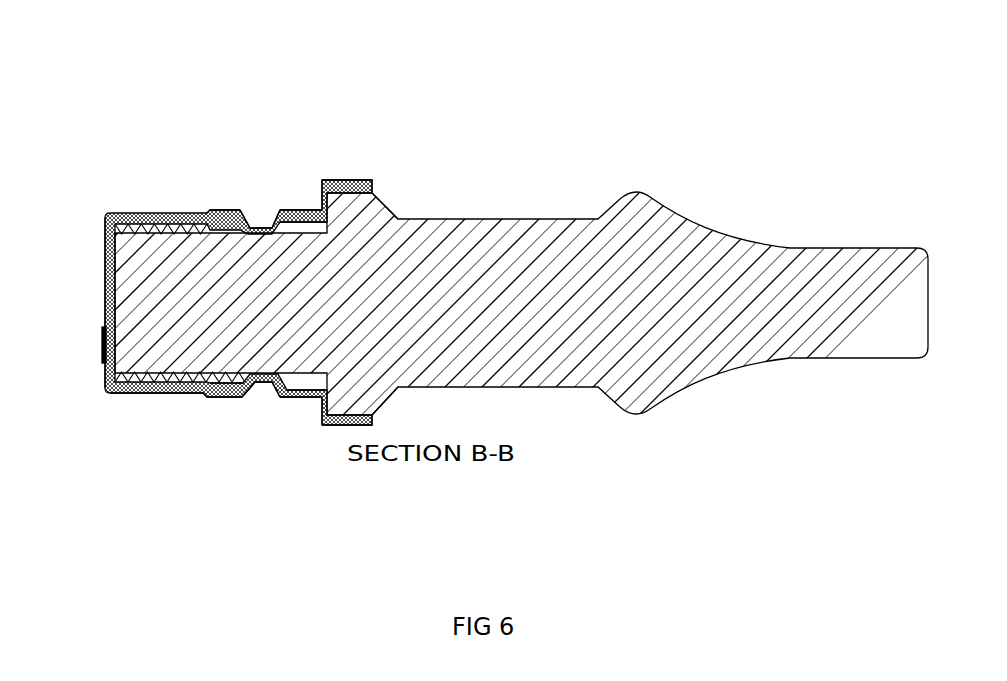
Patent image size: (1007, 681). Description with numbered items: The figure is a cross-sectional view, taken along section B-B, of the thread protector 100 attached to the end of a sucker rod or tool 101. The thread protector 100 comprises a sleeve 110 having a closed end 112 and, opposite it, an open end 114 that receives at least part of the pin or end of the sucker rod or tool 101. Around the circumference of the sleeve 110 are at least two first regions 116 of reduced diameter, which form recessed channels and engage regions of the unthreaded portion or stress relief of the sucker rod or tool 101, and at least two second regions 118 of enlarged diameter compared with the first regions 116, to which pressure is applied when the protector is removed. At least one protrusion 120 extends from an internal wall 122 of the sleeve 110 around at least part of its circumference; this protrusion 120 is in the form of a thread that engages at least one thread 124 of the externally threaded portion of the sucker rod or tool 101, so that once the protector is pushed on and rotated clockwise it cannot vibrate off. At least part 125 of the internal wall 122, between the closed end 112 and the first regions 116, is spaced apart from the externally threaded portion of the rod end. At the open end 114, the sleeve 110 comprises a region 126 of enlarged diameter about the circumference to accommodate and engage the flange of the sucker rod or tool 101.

The thread protector 100 is at (250, 103).
The sucker rod or tool 101 is at (603, 158).
The sleeve 110 is at (193, 398).
The closed end 112 is at (98, 232).
The open end 114 is at (375, 190).
The first regions 116 is at (260, 222).
The second regions 118 is at (302, 210).
The protrusion 120 is at (140, 223).
The internal wall 122 is at (180, 223).
The thread 124 is at (157, 378).
The part of the internal wall 125 is at (223, 397).
The region of enlarged diameter 126 is at (345, 180).